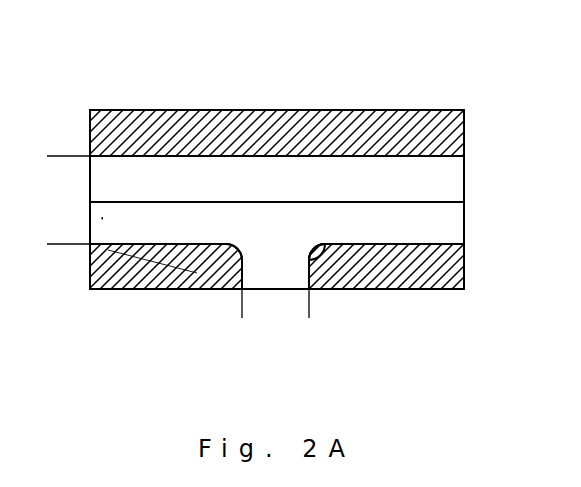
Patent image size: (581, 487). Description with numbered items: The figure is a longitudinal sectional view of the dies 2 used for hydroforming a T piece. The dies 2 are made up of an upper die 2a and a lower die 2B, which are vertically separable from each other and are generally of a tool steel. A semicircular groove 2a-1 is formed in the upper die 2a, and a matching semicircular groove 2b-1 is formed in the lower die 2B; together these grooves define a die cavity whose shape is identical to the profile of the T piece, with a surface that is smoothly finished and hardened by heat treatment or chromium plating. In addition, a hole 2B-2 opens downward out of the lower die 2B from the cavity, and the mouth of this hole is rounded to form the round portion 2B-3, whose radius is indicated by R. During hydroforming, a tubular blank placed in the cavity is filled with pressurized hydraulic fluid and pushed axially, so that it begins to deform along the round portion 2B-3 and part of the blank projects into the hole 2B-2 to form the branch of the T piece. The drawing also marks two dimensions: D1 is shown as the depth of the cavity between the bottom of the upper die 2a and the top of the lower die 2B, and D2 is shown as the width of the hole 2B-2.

The dies 2 is at (195, 87).
The upper die 2a is at (437, 113).
The semicircular groove 2a-1 is at (423, 168).
The semicircular groove 2b-1 is at (432, 225).
The lower die 2B is at (443, 283).
The hole 2B-2 is at (302, 268).
The round portion 2B-3 is at (318, 248).
The round R is at (316, 252).
The thickness dimension D1 is at (58, 158).
The groove width dimension D2 is at (308, 308).